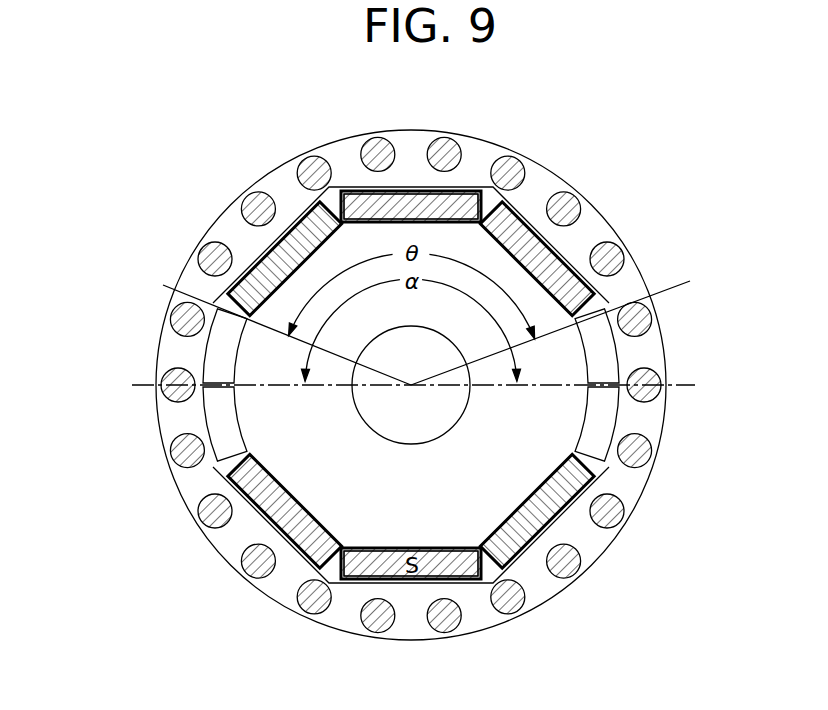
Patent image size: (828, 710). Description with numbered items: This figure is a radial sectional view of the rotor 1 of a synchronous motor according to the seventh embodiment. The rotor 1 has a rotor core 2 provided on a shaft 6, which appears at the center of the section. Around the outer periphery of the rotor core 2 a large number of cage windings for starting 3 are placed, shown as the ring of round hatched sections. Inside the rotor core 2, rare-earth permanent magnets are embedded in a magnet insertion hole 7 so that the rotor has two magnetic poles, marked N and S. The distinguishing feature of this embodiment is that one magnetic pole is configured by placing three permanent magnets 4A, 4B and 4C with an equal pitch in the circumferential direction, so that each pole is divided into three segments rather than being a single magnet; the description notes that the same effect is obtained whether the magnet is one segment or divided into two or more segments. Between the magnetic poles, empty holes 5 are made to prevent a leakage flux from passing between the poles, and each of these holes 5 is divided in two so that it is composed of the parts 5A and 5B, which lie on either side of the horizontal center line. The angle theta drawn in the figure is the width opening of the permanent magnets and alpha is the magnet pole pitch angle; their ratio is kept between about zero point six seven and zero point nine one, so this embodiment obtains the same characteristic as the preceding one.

The rotor 1 is at (565, 183).
The rotor core 2 is at (597, 232).
The cage windings for starting 3 is at (648, 302).
The permanent magnet 4A is at (268, 260).
The permanent magnet 4B is at (470, 190).
The permanent magnet 4C is at (523, 228).
The empty holes 5 is at (140, 385).
The divided hole 5A is at (218, 358).
The divided hole 5B is at (218, 423).
The shaft 6 is at (411, 385).
The magnet insertion hole 7 is at (253, 524).